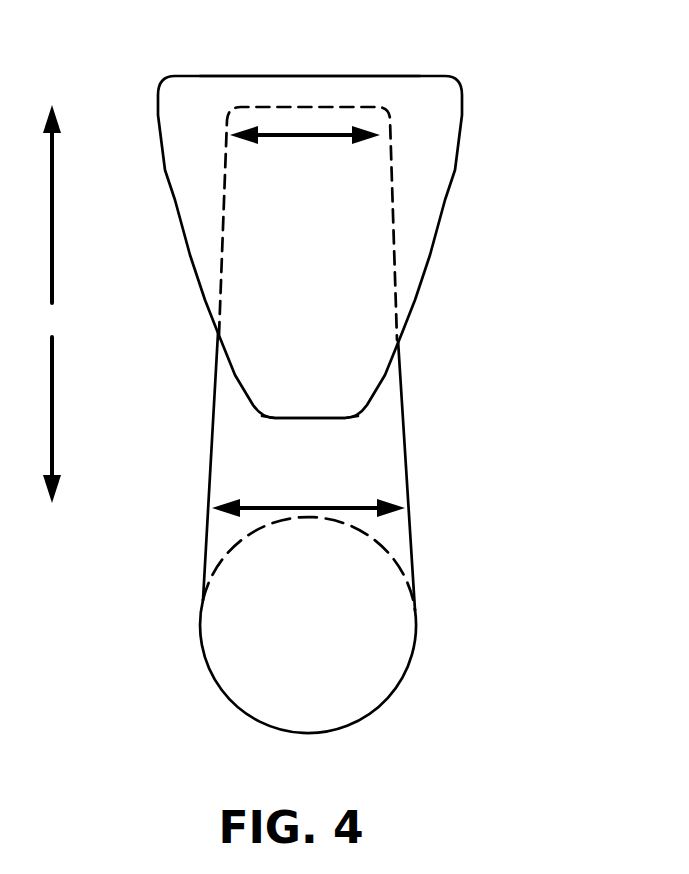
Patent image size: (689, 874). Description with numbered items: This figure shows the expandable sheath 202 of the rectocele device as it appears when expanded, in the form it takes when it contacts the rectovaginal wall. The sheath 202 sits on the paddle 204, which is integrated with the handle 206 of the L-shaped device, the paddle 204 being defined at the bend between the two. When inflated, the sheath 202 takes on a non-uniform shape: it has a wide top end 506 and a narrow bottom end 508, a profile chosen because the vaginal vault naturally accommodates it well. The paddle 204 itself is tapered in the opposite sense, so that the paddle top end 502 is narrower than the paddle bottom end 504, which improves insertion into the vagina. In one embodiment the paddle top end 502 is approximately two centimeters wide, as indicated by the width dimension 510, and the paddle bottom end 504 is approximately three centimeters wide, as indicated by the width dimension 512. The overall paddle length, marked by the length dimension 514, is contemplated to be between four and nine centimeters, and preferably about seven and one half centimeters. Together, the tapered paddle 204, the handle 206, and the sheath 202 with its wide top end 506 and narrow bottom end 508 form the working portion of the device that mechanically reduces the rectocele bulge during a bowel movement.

The expandable sheath 202 is at (450, 187).
The paddle 204 is at (215, 365).
The handle 206 is at (407, 665).
The paddle top end 502 is at (258, 107).
The paddle bottom end 504 is at (202, 510).
The wide top end 506 is at (355, 76).
The narrow bottom end 508 is at (342, 418).
The width of inner channel 510 is at (333, 135).
The inner circular channel of bulb portion 512 is at (313, 510).
The overall length 514 is at (53, 357).